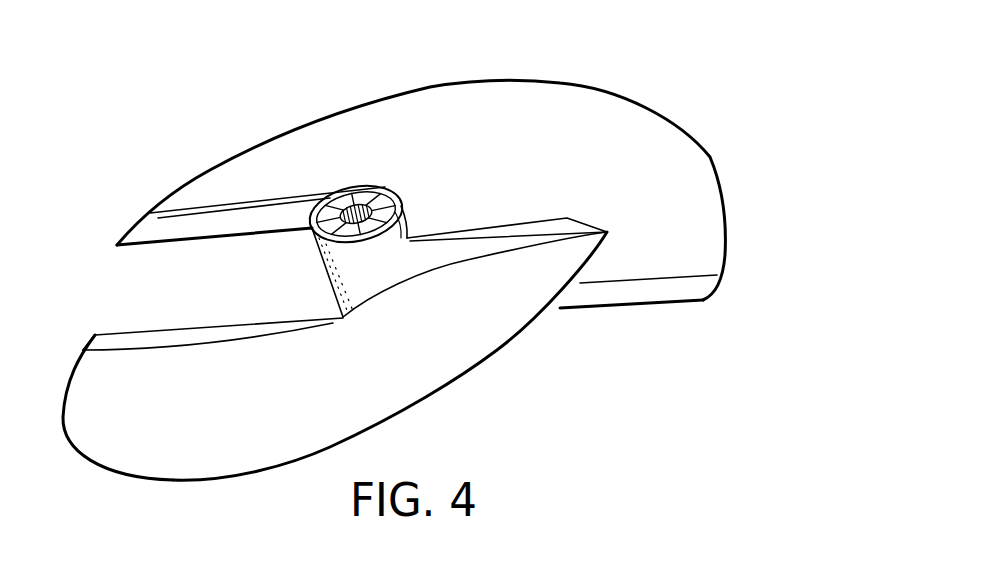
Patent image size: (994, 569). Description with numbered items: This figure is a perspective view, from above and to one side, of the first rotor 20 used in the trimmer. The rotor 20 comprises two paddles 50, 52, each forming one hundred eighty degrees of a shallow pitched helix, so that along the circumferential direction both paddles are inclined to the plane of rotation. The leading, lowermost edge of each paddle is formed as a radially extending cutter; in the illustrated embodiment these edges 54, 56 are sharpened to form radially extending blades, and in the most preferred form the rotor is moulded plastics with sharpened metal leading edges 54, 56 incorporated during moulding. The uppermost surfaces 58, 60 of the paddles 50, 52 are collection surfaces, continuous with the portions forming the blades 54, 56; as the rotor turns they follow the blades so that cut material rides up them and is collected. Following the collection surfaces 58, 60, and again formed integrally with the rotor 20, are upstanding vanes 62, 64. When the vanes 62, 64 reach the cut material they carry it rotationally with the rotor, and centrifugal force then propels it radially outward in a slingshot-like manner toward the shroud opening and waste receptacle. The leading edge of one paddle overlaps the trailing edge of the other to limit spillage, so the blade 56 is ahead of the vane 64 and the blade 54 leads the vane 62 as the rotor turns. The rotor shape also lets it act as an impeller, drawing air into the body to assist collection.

The rotor 20 is at (486, 190).
The paddle 50 is at (328, 350).
The paddle 52 is at (495, 78).
The blade 54 is at (108, 332).
The blade 56 is at (660, 307).
The collection surface 58 is at (600, 145).
The collection surface 60 is at (480, 340).
The upstanding vane 62 is at (188, 203).
The upstanding vane 64 is at (533, 213).